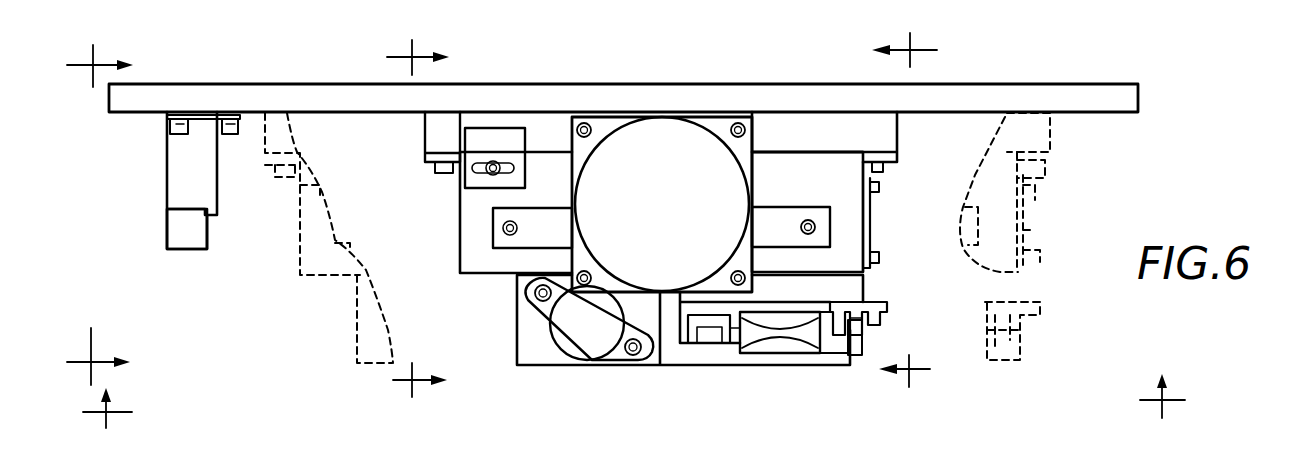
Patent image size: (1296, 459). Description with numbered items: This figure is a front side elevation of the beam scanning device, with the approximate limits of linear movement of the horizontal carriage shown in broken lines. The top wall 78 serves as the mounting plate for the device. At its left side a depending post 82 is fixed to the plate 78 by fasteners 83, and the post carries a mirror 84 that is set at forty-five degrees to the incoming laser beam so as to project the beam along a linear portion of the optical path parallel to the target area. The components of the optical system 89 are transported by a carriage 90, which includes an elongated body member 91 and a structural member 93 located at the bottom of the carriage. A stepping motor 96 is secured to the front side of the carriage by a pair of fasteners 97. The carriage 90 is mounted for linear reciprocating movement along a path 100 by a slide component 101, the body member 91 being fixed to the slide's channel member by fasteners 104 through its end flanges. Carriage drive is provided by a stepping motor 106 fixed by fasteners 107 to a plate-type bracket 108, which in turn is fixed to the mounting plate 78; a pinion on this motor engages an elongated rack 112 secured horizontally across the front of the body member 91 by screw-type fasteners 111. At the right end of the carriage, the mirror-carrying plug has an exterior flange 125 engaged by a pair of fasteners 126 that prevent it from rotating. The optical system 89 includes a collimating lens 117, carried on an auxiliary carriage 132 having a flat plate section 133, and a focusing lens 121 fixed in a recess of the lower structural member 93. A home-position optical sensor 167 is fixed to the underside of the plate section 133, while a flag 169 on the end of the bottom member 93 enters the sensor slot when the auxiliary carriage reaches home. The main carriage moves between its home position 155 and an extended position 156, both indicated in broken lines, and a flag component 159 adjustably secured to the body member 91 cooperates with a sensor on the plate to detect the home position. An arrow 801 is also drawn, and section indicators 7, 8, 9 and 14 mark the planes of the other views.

The top wall 78 is at (213, 85).
The depending post 82 is at (167, 192).
The fasteners 83 is at (222, 136).
The mirror 84 is at (207, 244).
The extended position 156 is at (300, 282).
The flag component 159 is at (466, 130).
The fasteners 104 is at (440, 174).
The elongated body member 91 is at (460, 247).
The stepping motor 106 is at (572, 200).
The carriage 90 is at (503, 277).
The fasteners 107 is at (733, 135).
The stepping motor 96 is at (582, 363).
The fasteners 97 is at (620, 338).
The optical system 89 is at (715, 374).
The collimating lens 117 is at (762, 312).
The focusing lens 121 is at (755, 355).
The flat plate section 133 is at (804, 306).
The auxiliary carriage 132 is at (868, 302).
The optical sensor 167 is at (887, 311).
The flag 169 is at (863, 340).
The structural member 93 is at (820, 366).
The slide component 101 is at (898, 132).
The path 100 is at (855, 135).
The plate-type bracket 108 is at (753, 165).
The elongated rack 112 is at (810, 207).
The screw-type fasteners 111 is at (802, 230).
The exterior flange 125 is at (871, 232).
The fasteners 126 is at (879, 189).
The home position 155 is at (1030, 228).
The direction arrow 801 is at (1080, 198).
The section line 8- 8 is at (100, 216).
The section line 7- 7 is at (634, 405).
The section line 9- 9 is at (418, 218).
The section line 14- 14 is at (906, 212).